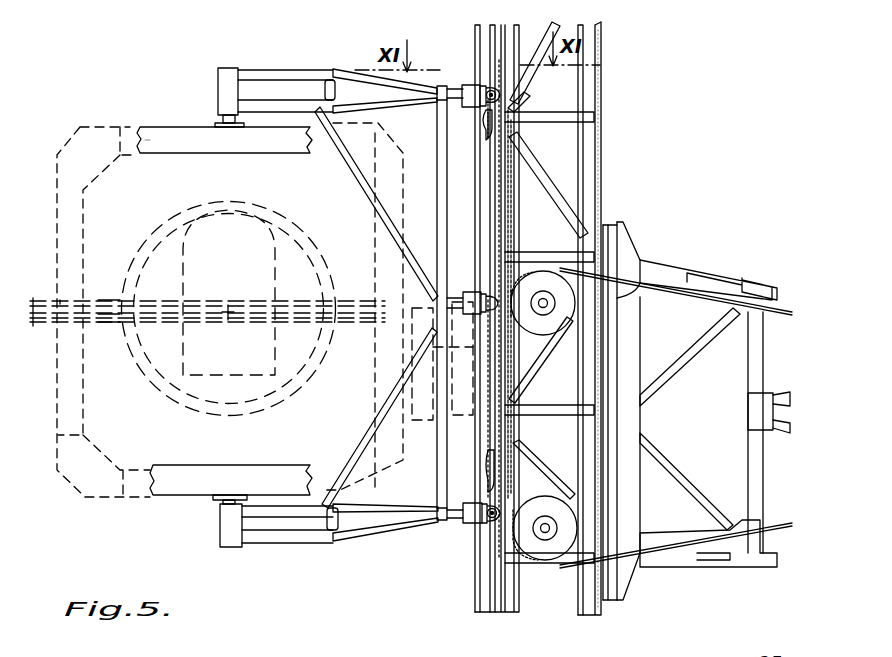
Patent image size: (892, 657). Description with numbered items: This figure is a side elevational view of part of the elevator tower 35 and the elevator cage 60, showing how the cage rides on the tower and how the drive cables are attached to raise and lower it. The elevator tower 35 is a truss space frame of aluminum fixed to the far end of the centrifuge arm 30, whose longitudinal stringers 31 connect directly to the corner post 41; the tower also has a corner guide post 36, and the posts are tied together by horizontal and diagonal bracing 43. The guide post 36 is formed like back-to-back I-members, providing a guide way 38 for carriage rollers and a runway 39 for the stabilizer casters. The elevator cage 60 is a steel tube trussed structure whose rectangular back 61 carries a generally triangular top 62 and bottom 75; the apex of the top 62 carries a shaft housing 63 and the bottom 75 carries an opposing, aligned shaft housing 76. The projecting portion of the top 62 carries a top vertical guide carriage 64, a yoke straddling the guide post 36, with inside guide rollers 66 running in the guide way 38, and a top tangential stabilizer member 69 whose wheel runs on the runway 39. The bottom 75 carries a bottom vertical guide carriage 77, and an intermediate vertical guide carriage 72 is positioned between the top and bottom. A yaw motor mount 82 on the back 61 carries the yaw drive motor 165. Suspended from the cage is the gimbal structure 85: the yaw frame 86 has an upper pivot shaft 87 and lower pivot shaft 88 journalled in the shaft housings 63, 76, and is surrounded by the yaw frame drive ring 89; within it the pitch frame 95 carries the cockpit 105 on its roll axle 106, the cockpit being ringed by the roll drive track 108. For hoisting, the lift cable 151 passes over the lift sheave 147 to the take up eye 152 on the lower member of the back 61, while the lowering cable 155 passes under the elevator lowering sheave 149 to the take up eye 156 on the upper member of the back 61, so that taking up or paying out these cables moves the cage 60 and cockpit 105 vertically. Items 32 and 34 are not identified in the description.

The centrifuge arm 30 is at (700, 412).
The longitudinal stringers 31 is at (772, 287).
The vertical frame post 32 is at (763, 474).
The diagonal brace 34 is at (670, 380).
The elevator tower 35 is at (604, 84).
The corner guide post 36 is at (474, 600).
The guide way 38 is at (490, 604).
The runway 39 is at (490, 560).
The corner post 41 is at (597, 142).
The bracing 43 is at (574, 197).
The elevator cage 60 is at (306, 72).
The back 61 is at (438, 142).
The top 62 is at (266, 76).
The shaft housing 63 is at (218, 90).
The top vertical guide carriage 64 is at (470, 84).
The inside guide rollers 66 is at (490, 88).
The top tangential stabilizer member 69 is at (500, 100).
The intermediate vertical guide carriage 72 is at (473, 292).
The bottom 75 is at (297, 543).
The shaft housing 76 is at (230, 530).
The bottom vertical guide carriage 77 is at (469, 525).
The yaw motor mount 82 is at (421, 422).
The gimbal structure 85 is at (155, 125).
The yaw frame 86 is at (161, 148).
The upper pivot shaft 87 is at (222, 120).
The lower pivot shaft 88 is at (222, 505).
The yaw frame drive ring 89 is at (32, 324).
The pitch frame 95 is at (110, 297).
The cockpit 105 is at (181, 244).
The roll axle 106 is at (228, 320).
The roll drive track 108 is at (182, 410).
The lift sheave 147 is at (554, 332).
The elevator lowering sheave 149 is at (557, 560).
The lift cable 151 is at (670, 292).
The take up eye 152 is at (500, 490).
The lowering cable 155 is at (661, 545).
The take up eye 156 is at (485, 112).
The yaw drive motor 165 is at (462, 420).